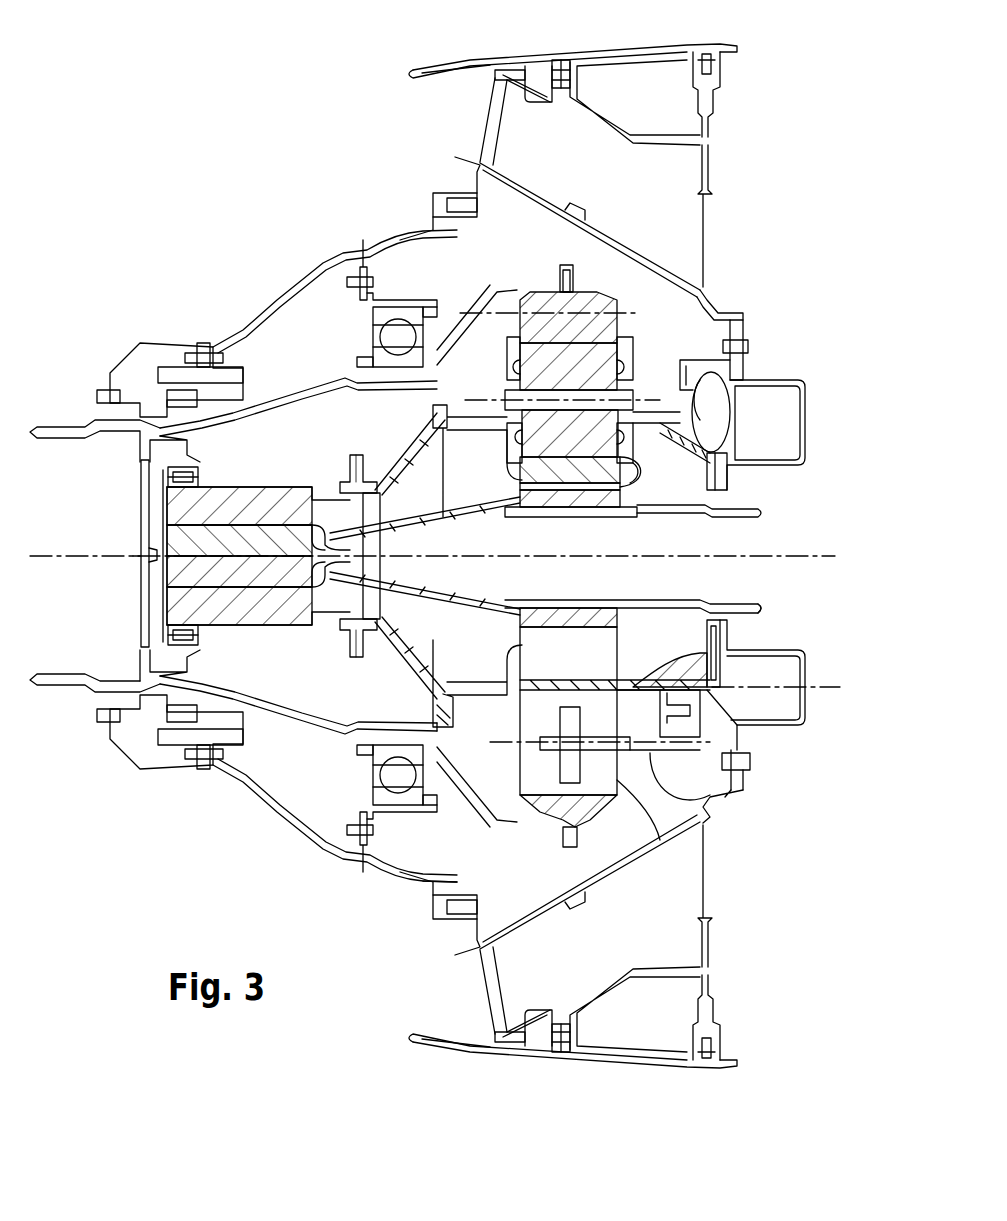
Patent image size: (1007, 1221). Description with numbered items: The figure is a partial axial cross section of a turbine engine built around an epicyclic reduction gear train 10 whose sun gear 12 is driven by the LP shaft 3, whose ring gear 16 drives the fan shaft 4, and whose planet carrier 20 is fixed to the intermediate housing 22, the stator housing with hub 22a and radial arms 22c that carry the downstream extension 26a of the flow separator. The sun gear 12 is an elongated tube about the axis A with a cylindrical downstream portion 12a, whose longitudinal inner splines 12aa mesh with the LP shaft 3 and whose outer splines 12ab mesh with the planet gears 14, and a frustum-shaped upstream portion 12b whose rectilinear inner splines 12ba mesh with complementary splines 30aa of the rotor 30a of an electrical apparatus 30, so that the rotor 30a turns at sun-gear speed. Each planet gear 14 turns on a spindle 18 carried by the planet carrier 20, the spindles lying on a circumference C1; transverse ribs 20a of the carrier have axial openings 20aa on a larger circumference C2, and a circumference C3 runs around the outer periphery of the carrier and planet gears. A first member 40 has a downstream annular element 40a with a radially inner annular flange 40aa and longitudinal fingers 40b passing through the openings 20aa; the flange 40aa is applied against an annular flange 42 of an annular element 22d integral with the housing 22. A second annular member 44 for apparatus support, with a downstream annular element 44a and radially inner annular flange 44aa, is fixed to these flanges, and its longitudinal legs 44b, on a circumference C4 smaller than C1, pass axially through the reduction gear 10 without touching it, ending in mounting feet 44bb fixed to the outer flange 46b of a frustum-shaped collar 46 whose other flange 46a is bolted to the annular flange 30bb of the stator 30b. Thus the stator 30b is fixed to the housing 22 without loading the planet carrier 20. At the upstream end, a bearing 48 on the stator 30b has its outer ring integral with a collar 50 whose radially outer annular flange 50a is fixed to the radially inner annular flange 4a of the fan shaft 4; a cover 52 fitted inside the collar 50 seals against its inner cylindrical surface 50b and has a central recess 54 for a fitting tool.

The LP shaft 3 is at (766, 595).
The fan shaft 4 is at (465, 333).
The radially inner annular flange 4a is at (188, 350).
The epicyclic reduction gear train 10 is at (604, 283).
The sun gear 12 is at (587, 603).
The downstream portion 12a is at (565, 617).
The longitudinal inner splines 12aa is at (548, 517).
The outer splines 12ab is at (520, 490).
The upstream portion 12b is at (412, 592).
The rectilinear inner splines 12ba is at (403, 549).
The planet gears 14 is at (547, 330).
The ring gear 16 is at (610, 292).
The spindle 18 is at (630, 383).
The planet carrier 20 is at (640, 348).
The transverse rib 20a is at (580, 812).
The axial opening 20aa is at (580, 780).
The intermediate housing 22 is at (727, 307).
The hub 22a is at (745, 325).
The radial arms 22c is at (673, 212).
The annular element 22d is at (806, 412).
The downstream extension 26a is at (672, 110).
The electrical apparatus 30 is at (209, 539).
The rotor 30a is at (168, 540).
The complementary splines 30aa is at (330, 585).
The stator 30b is at (180, 598).
The annular flange 30bb is at (350, 457).
The first member 40 is at (697, 734).
The downstream annular element 40a is at (742, 721).
The radially inner annular flange 40aa is at (717, 663).
The longitudinal fingers 40b is at (717, 804).
The annular flange 42 is at (728, 489).
The second annular member 44 is at (725, 390).
The downstream annular element 44a is at (700, 439).
The radially inner annular flange 44aa is at (712, 459).
The longitudinal legs 44b is at (633, 680).
The mounting foot 44bb is at (470, 697).
The frustum-shaped collar 46 is at (410, 657).
The radially outer annular flange 46a is at (345, 690).
The radially outer annular flange 46b is at (375, 762).
The bearing 48 is at (200, 475).
The collar 50 is at (187, 660).
The radially outer annular flange 50a is at (130, 443).
The inner cylindrical surface 50b is at (143, 640).
The cover 52 is at (141, 568).
The recess 54 is at (149, 556).
The axis A is at (787, 553).
The circumference C1 is at (467, 401).
The circumference C2 is at (505, 745).
The circumference C3 is at (507, 311).
The circumference C4 is at (820, 682).